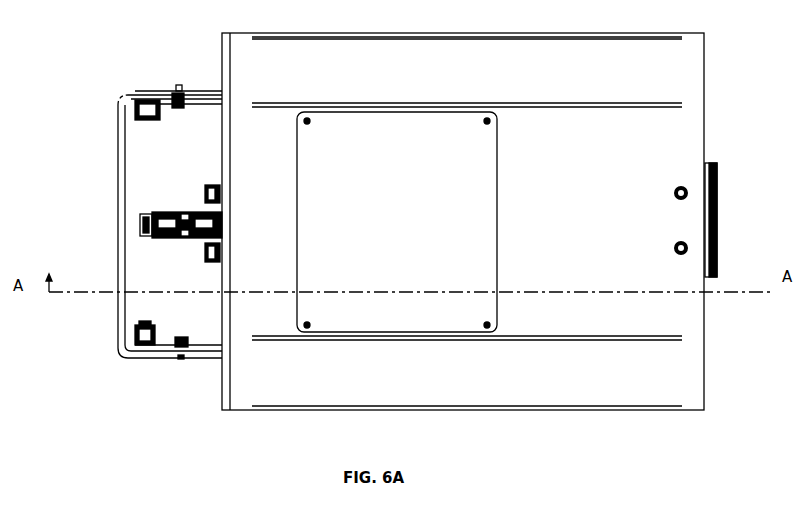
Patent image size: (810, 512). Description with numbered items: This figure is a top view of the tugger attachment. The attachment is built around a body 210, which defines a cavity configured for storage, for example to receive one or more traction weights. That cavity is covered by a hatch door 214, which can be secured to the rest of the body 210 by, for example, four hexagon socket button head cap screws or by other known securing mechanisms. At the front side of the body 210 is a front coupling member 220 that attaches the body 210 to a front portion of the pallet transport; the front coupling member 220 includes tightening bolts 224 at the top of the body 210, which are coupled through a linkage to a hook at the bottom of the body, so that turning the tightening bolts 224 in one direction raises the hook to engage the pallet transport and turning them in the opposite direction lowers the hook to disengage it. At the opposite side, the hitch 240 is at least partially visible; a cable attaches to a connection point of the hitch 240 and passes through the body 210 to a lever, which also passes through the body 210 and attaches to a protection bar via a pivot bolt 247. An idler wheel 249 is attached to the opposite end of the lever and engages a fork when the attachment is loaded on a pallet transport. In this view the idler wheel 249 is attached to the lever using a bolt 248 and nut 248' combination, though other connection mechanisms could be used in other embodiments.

The body 210 is at (246, 411).
The hatch door 214 is at (470, 213).
The front coupling member 220 is at (720, 178).
The tightening bolts 224 is at (660, 230).
The hitch 240 is at (175, 238).
The pivot bolt 247 is at (172, 113).
The bolt 248 is at (80, 222).
The nut 248' is at (86, 113).
The idler wheel 249 is at (148, 111).